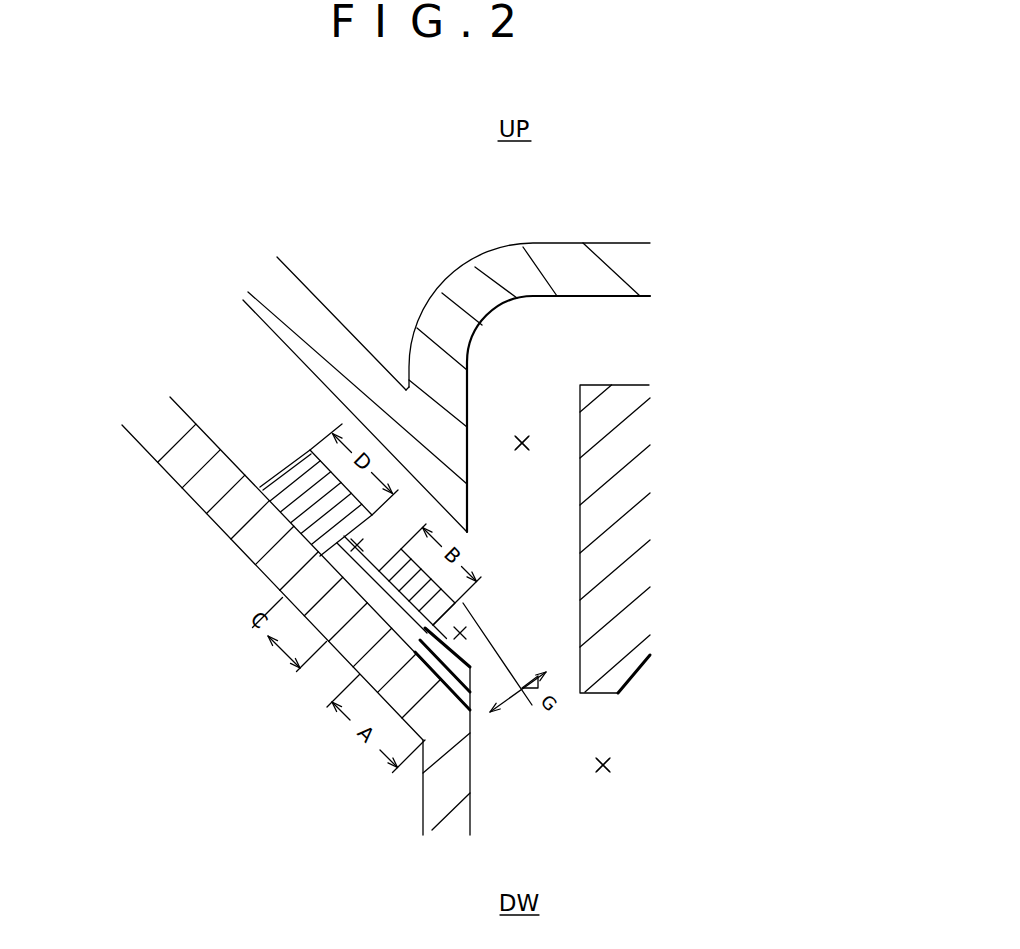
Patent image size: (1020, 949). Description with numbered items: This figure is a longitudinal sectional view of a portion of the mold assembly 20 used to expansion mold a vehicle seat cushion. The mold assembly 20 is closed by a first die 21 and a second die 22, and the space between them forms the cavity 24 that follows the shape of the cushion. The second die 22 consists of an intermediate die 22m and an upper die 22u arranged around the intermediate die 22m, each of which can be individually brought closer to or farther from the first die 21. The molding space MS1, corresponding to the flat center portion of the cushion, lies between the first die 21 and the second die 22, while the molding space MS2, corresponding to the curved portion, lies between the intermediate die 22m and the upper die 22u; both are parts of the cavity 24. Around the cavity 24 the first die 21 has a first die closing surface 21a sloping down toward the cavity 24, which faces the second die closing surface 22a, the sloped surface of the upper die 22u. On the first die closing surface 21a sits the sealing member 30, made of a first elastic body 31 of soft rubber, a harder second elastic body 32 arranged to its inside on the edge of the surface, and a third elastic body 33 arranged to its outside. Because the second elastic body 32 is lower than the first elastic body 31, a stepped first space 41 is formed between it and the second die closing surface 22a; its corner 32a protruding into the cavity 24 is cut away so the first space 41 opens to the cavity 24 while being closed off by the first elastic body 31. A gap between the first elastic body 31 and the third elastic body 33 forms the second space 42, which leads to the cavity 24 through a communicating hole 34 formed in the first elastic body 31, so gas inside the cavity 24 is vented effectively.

The mold assembly 20 is at (697, 222).
The second die 22 is at (529, 387).
The upper die 22u is at (300, 303).
The second die closing surface 22a is at (320, 380).
The intermediate die 22m is at (620, 387).
The first die 21 is at (433, 792).
The first die closing surface 21a is at (227, 443).
The sealing member 30 is at (311, 628).
The third elastic body 33 is at (295, 505).
The second space 42 is at (352, 545).
The first elastic body 31 is at (438, 630).
The first space 41 is at (425, 645).
The second elastic body 32 is at (428, 655).
The corner 32a is at (477, 700).
The communicating hole 34 is at (390, 590).
The cavity 24 is at (562, 604).
The molding space MS1 is at (613, 763).
The molding space MS2 is at (530, 441).